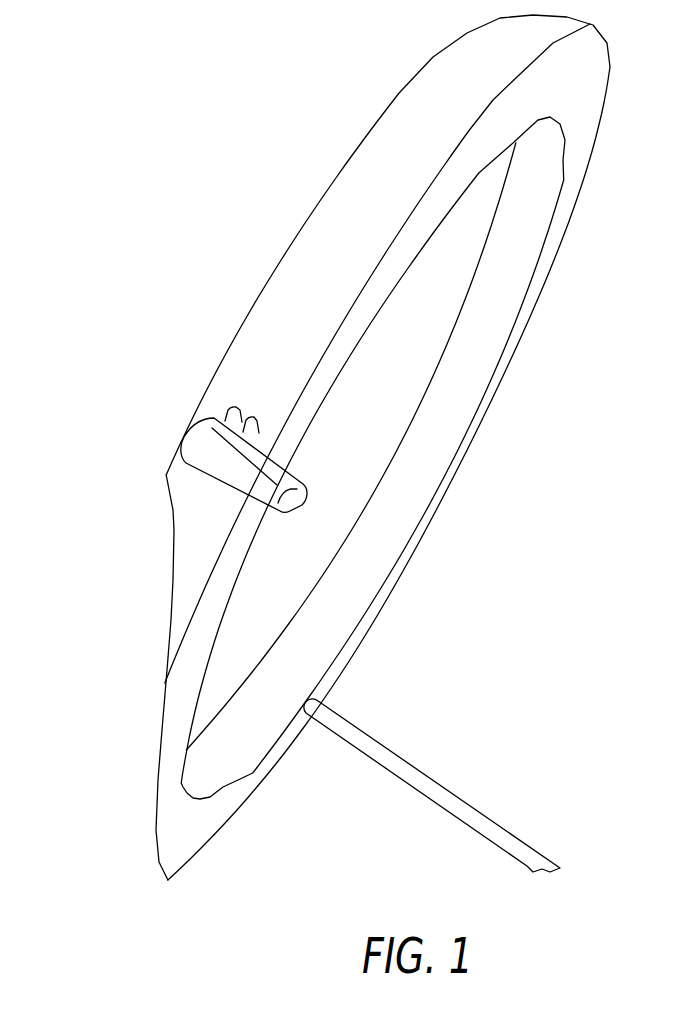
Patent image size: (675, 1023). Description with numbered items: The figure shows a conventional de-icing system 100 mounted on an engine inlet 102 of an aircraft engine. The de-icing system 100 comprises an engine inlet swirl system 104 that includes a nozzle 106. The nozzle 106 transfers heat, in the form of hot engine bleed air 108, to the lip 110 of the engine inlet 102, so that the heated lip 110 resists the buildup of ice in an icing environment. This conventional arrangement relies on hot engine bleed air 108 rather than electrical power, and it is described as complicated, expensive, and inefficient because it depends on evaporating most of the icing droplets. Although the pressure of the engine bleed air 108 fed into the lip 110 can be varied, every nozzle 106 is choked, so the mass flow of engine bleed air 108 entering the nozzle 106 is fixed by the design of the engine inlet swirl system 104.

The de-icing system 100 is at (120, 621).
The engine inlet 102 is at (350, 167).
The engine inlet swirl system 104 is at (188, 375).
The nozzle 106 is at (200, 455).
The engine bleed air 108 is at (298, 499).
The lip 110 is at (293, 270).